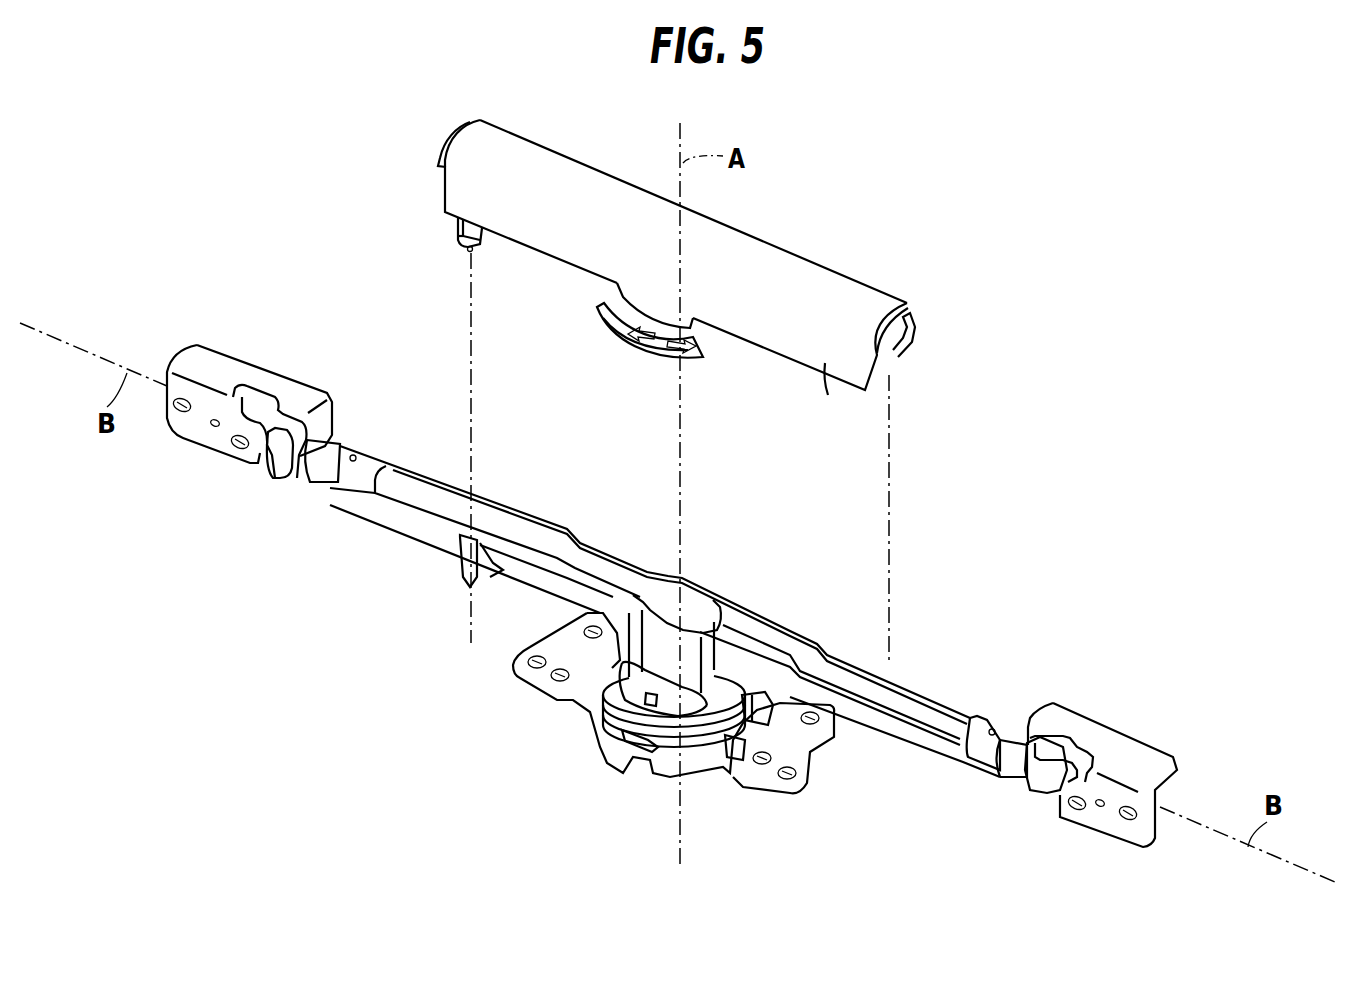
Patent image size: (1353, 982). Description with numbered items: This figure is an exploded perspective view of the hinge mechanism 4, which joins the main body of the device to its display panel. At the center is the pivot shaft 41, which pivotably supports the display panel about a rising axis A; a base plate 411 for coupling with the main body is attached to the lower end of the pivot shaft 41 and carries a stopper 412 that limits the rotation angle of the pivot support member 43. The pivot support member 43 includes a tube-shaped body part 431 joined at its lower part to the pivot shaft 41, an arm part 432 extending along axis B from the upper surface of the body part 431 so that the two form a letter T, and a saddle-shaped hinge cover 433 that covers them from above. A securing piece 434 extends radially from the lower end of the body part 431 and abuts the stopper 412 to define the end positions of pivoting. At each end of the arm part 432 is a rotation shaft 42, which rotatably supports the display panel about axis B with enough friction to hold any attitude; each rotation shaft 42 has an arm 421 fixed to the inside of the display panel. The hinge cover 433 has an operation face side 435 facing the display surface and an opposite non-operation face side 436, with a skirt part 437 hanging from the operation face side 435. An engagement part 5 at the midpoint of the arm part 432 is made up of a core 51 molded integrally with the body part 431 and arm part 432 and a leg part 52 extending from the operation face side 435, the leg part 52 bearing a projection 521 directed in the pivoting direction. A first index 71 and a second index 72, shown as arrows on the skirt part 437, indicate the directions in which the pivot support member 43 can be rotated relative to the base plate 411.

The hinge mechanism 4 is at (884, 216).
The pivot shaft 41 is at (703, 727).
The base plate 411 is at (587, 737).
The stopper 412 is at (805, 755).
The rotation shaft 42 is at (285, 445).
The arm 421 is at (237, 367).
The pivot support member 43 is at (948, 430).
The body part 431 is at (708, 593).
The arm part 432 is at (867, 667).
The hinge cover 433 is at (825, 363).
The securing piece 434 is at (733, 743).
The operation face side 435 is at (565, 236).
The non-operation face side 436 is at (747, 270).
The skirt part 437 is at (618, 320).
The engagement part 5 is at (395, 303).
The core 51 is at (462, 564).
The leg part 52 is at (457, 228).
The projection 521 is at (474, 250).
The first index 71 is at (643, 343).
The second index 72 is at (683, 353).